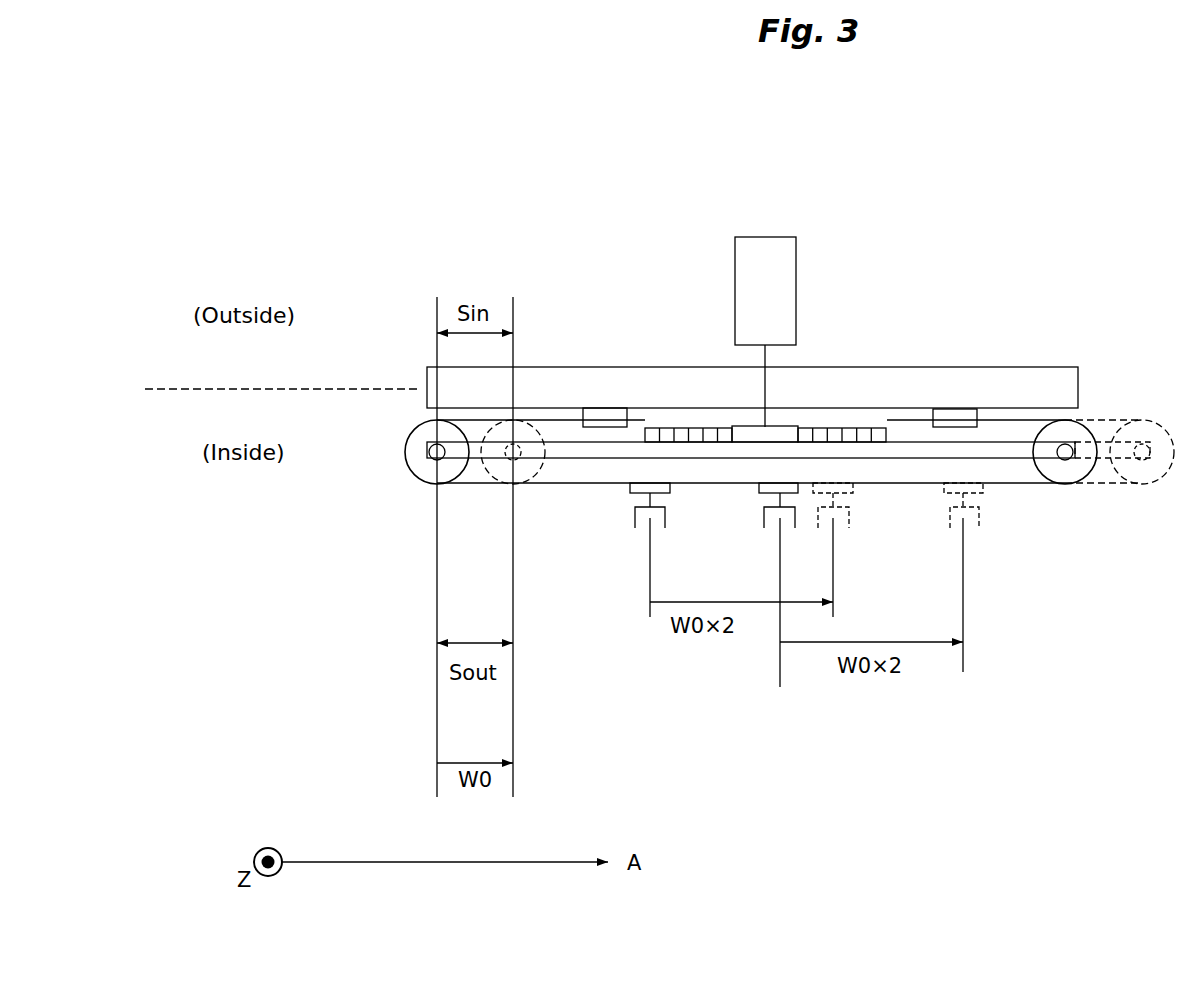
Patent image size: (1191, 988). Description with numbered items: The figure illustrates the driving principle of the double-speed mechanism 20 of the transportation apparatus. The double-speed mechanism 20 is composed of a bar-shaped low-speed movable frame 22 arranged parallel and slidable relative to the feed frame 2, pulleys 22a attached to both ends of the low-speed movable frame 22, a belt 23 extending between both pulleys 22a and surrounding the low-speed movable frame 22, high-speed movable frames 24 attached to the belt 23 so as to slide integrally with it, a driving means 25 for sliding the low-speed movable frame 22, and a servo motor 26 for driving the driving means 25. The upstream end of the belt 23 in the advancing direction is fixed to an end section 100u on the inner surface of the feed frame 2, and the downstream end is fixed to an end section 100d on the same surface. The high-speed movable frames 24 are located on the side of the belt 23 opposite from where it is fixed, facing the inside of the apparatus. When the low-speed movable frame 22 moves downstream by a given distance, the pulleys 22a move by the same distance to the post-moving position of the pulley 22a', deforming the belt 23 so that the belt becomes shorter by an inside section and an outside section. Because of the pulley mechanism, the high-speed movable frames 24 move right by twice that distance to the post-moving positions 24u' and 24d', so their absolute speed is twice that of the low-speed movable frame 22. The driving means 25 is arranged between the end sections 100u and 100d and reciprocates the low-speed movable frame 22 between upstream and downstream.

The feed frame 2 is at (1055, 377).
The double-speed mechanism 20 is at (1003, 215).
The low-speed movable frame 22 is at (978, 452).
The pulleys 22a is at (782, 482).
The post-moving pulley 22a' is at (461, 522).
The belt 23 is at (550, 485).
The high-speed movable frame 24 is at (630, 490).
The post-moving position of upstream high-speed movable frame 24u' is at (951, 577).
The post-moving position of downstream high-speed movable frame 24d' is at (1001, 552).
The driving means 25 is at (782, 430).
The servo motor 26 is at (782, 252).
The end section 100u is at (603, 410).
The end section 100d is at (948, 410).